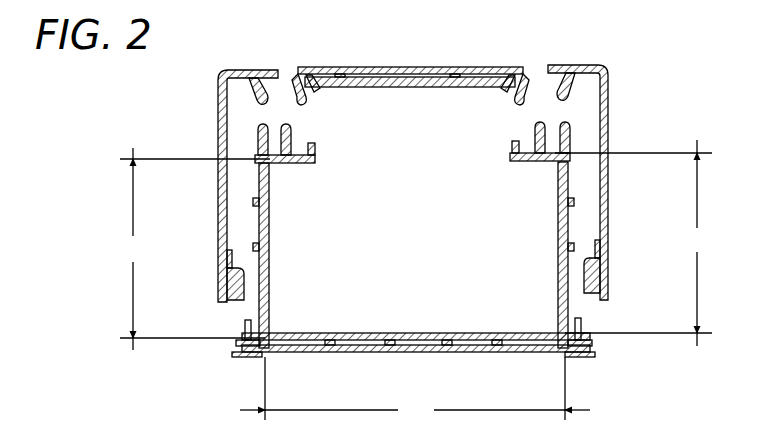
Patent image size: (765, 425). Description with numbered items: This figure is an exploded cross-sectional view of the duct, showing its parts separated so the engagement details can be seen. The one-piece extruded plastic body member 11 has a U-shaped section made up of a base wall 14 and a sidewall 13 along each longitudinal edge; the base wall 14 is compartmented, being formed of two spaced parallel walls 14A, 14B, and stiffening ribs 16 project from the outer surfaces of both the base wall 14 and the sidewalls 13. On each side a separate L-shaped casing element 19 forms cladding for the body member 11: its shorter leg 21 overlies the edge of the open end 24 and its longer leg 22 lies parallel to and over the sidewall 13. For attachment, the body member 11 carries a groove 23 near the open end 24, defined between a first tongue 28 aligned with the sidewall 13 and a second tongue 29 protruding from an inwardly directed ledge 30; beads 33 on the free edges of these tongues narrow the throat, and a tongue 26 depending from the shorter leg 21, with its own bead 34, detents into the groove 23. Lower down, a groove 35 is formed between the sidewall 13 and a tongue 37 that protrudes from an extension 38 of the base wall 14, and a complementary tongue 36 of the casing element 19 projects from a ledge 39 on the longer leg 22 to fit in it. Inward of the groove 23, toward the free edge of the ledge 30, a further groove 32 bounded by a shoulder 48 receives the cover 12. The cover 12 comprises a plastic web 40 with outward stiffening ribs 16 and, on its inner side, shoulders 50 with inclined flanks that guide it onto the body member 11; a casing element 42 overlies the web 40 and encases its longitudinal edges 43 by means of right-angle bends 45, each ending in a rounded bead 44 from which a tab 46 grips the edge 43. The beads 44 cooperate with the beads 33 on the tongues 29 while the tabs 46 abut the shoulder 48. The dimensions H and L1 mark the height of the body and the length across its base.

The body member 11 is at (468, 362).
The cover 12 is at (417, 69).
The sidewall 13 is at (256, 302).
The base wall 14 is at (416, 323).
The parallel wall 14A is at (467, 333).
The parallel wall 14B is at (496, 345).
The stiffening ribs 16 is at (252, 246).
The casing element 19 is at (411, 170).
The shorter leg 21 is at (246, 70).
The longer leg 22 is at (218, 175).
The groove 23 is at (407, 221).
The open end 24 is at (420, 164).
The tongue 26 is at (266, 70).
The first tongue 28 is at (255, 158).
The second tongue 29 is at (285, 165).
The ledge 30 is at (315, 170).
The groove 32 is at (300, 145).
The longitudinal beads 33 is at (287, 126).
The longitudinal bead 34 is at (248, 96).
The groove 35 is at (256, 326).
The tongue 36 is at (226, 290).
The tongue 37 is at (242, 345).
The extension 38 is at (246, 357).
The ledge 39 is at (222, 258).
The web 40 is at (412, 88).
The casing element 42 is at (410, 66).
The longitudinal edges 43 is at (318, 66).
The rounded bead 44 is at (318, 95).
The right-angle bends 45 is at (298, 70).
The tab 46 is at (341, 66).
The shoulder 48 is at (312, 152).
The shoulders 50 is at (335, 100).
The height H is at (416, 245).
The length L1 is at (415, 390).